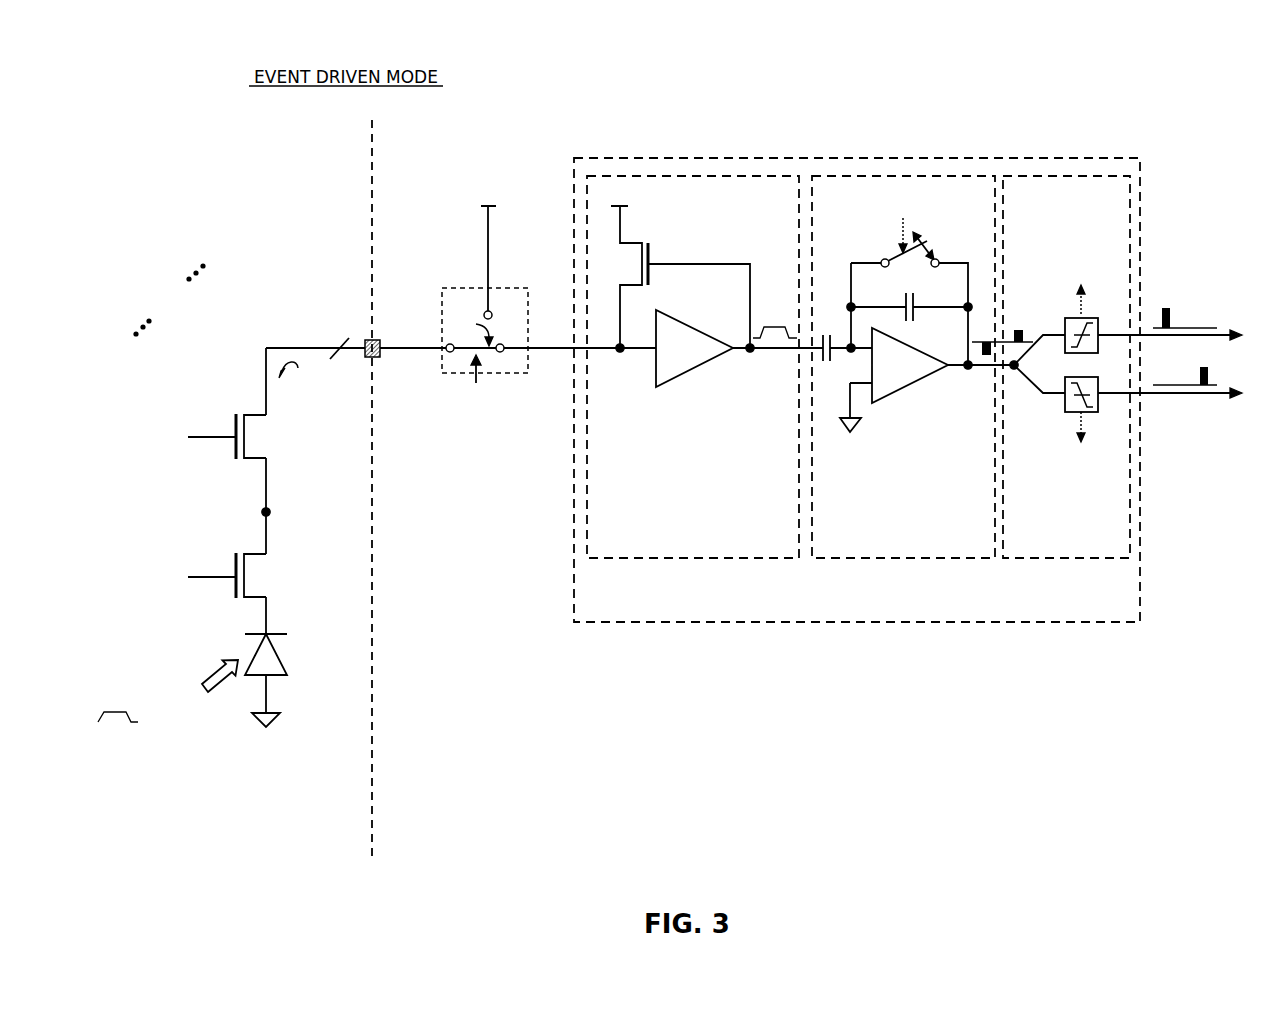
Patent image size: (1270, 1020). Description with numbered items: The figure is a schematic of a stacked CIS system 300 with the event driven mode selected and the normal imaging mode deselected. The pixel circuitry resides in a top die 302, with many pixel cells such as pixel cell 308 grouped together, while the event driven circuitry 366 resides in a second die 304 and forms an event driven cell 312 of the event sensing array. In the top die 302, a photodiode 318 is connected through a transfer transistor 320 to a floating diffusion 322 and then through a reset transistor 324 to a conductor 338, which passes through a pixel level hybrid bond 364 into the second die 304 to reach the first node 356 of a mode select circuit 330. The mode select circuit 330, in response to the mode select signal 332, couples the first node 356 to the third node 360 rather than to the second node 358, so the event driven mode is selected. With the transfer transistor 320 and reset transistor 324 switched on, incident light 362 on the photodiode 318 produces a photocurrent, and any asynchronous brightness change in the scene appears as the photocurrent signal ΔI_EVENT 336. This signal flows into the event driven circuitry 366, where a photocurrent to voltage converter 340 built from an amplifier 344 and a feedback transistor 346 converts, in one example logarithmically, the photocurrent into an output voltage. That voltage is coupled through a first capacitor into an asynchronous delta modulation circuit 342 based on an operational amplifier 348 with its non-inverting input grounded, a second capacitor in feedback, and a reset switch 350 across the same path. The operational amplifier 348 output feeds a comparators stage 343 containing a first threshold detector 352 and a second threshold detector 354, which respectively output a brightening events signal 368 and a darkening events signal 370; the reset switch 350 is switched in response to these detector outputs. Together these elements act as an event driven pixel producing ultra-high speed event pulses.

The stacked CIS system 300 is at (1178, 35).
The top die 302 is at (158, 836).
The second die 304 is at (926, 830).
The pixel cell 308 is at (200, 322).
The event driven cell 312 is at (729, 688).
The photodiode 318 is at (287, 671).
The transfer transistor 320 is at (230, 583).
The floating diffusion 322 is at (272, 505).
The reset transistor 324 is at (228, 449).
The mode select circuit 330 is at (451, 288).
The mode select signal 332 is at (471, 433).
The photocurrent signal ΔI_EVENT 336 is at (305, 400).
The conductor 338 is at (268, 345).
The photocurrent to voltage converter 340 is at (670, 556).
The asynchronous delta modulation circuit 342 is at (966, 555).
The comparators stage 343 is at (1116, 555).
The amplifier 344 is at (703, 338).
The transistor 346 is at (659, 247).
The operational amplifier 348 is at (931, 358).
The reset switch 350 is at (893, 253).
The first threshold detector 352 is at (1063, 321).
The second threshold detector 354 is at (1062, 406).
The first node 356 is at (443, 345).
The second node 358 is at (480, 307).
The third node 360 is at (505, 353).
The incident light 362 is at (209, 666).
The pixel level hybrid bond 364 is at (365, 334).
The event driven circuitry 366 is at (829, 625).
The brightening events signal 368 is at (1196, 263).
The darkening events signal 370 is at (1193, 450).